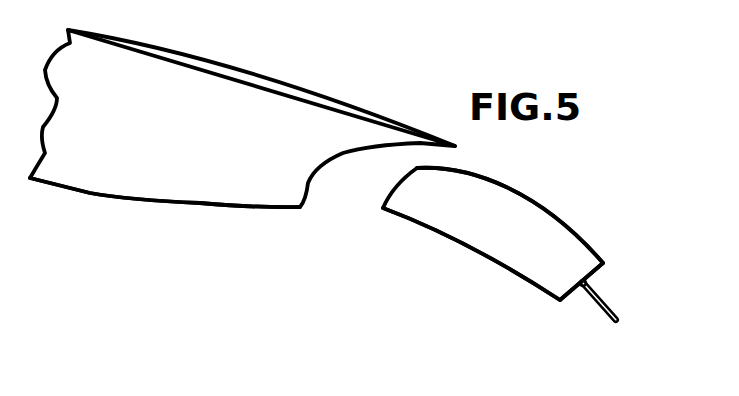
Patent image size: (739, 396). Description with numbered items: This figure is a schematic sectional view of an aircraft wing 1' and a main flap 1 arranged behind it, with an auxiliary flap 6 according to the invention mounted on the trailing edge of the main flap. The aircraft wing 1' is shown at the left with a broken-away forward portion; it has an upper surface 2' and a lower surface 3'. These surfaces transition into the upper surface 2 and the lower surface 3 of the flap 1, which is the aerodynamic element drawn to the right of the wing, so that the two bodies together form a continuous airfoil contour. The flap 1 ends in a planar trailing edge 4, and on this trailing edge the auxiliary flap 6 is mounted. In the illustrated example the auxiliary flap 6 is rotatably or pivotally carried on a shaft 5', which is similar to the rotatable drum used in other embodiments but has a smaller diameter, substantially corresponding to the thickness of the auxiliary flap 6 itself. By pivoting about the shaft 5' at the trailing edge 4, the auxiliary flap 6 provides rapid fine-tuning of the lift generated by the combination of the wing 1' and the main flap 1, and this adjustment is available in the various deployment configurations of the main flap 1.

The aircraft wing 1' is at (242, 118).
The upper surface 2' is at (261, 82).
The lower surface 3' is at (165, 222).
The flap 1 is at (493, 234).
The upper surface 2 is at (510, 213).
The lower surface 3 is at (471, 257).
The planar trailing edge 4 is at (603, 263).
The shaft 5' is at (581, 317).
The auxiliary flap 6 is at (610, 302).